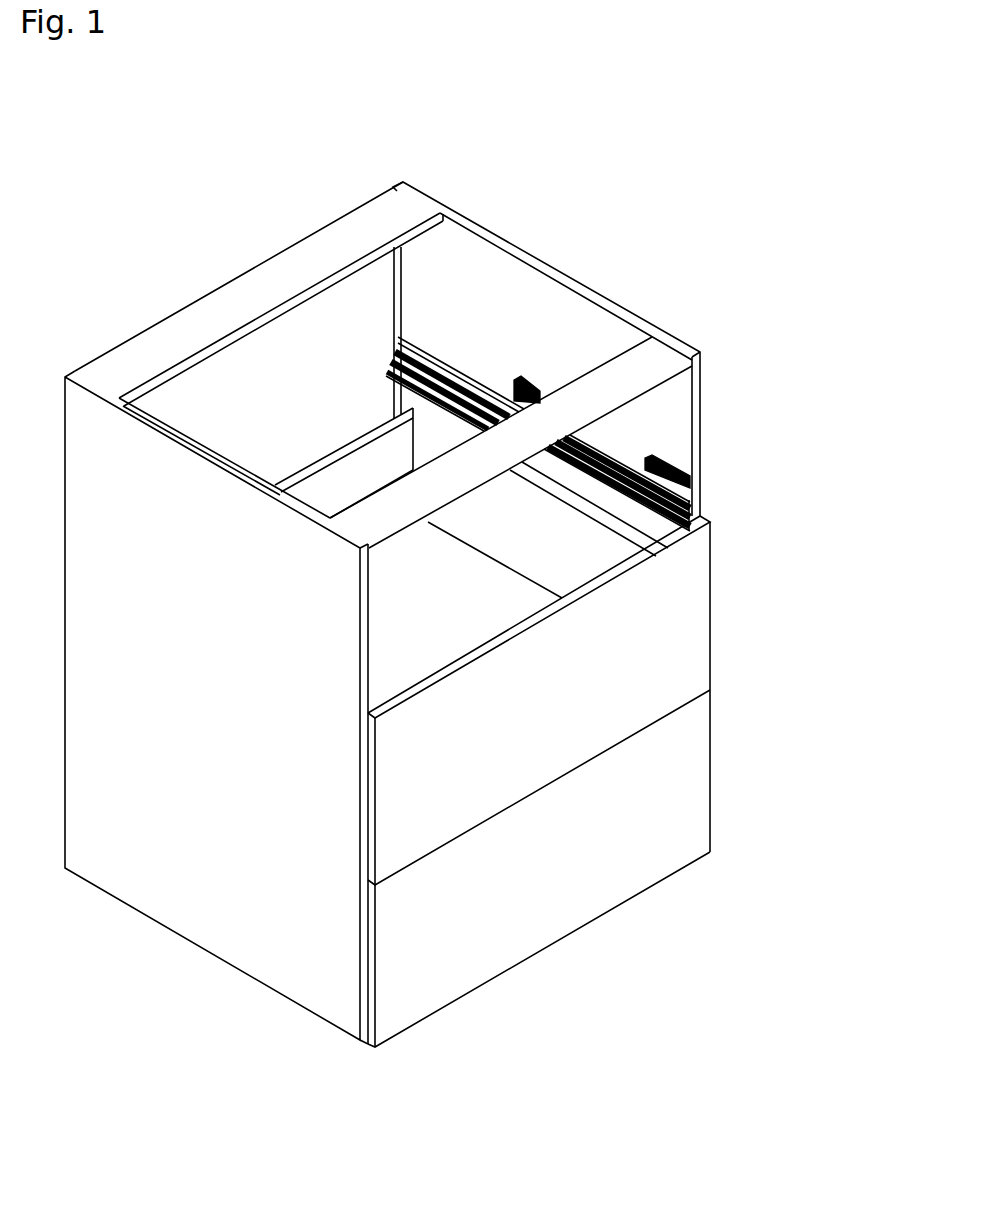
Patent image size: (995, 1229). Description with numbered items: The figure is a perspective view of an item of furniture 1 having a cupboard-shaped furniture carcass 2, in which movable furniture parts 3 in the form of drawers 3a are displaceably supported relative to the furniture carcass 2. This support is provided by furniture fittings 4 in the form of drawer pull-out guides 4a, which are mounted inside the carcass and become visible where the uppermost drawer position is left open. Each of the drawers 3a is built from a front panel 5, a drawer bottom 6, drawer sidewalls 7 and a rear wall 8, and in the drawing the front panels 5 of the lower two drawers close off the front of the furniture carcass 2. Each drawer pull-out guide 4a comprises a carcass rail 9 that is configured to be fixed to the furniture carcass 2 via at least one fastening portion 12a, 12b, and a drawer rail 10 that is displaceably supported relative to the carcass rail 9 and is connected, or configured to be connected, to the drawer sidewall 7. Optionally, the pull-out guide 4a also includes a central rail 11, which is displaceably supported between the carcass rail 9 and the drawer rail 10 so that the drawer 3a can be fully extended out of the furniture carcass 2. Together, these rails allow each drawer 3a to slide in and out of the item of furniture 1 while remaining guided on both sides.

The item of furniture 1 is at (142, 975).
The furniture carcass 2 is at (137, 888).
The movable furniture part 3 is at (622, 781).
The drawer 3a is at (728, 614).
The furniture fitting 4 is at (509, 275).
The drawer pull-out guide 4a is at (493, 370).
The front panel 5 is at (553, 717).
The drawer bottom 6 is at (435, 617).
The drawer sidewall 7 is at (437, 352).
The rear wall 8 is at (323, 455).
The carcass rail 9 is at (466, 380).
The drawer rail 10 is at (602, 461).
The central rail 11 is at (703, 514).
The fastening portion 12a is at (527, 388).
The fastening portion 12b is at (657, 464).